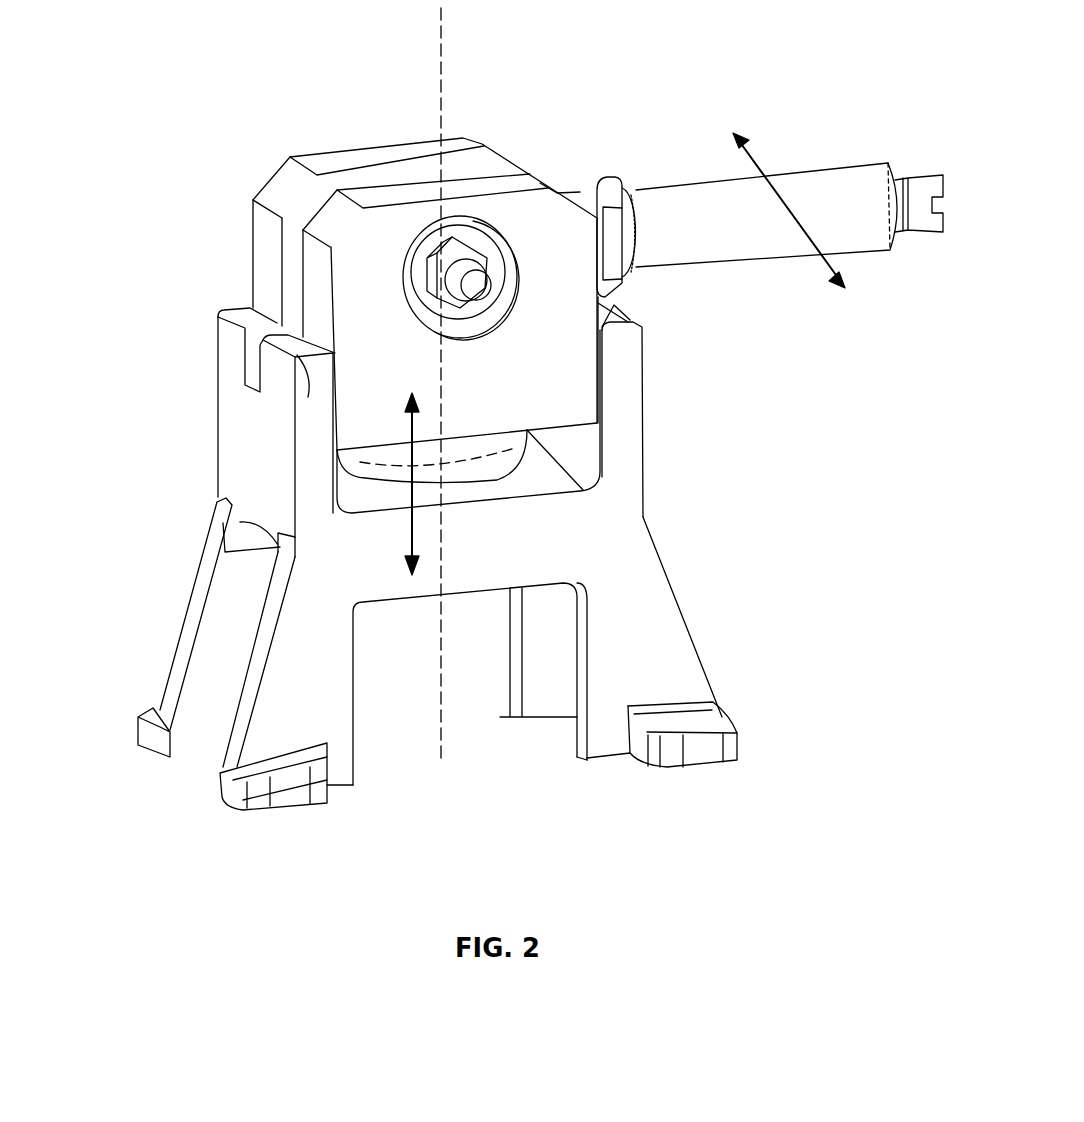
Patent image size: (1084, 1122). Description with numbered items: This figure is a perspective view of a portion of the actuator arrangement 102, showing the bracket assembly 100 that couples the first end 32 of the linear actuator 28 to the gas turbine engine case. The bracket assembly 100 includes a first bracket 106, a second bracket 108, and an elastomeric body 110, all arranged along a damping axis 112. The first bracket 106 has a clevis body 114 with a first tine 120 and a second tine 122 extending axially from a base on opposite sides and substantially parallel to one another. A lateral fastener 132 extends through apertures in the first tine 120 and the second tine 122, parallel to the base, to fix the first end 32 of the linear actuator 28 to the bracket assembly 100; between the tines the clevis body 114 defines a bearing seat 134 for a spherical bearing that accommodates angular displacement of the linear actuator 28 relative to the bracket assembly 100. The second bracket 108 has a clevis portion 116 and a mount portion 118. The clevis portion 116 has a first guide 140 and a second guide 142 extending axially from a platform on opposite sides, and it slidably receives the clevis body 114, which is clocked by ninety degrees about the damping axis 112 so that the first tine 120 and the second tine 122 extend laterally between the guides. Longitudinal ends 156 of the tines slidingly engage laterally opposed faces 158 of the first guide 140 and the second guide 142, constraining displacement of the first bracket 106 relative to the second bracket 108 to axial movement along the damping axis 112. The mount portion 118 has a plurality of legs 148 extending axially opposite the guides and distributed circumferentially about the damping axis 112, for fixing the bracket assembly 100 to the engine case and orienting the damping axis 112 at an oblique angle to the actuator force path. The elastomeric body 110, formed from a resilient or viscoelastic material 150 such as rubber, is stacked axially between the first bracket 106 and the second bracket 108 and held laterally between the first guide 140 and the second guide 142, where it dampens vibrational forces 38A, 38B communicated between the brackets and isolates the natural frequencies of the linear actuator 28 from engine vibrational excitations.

The bracket assembly 100 is at (142, 302).
The actuator arrangement 102 is at (264, 822).
The first bracket 106 is at (540, 340).
The second bracket 108 is at (575, 540).
The elastomeric body 110 is at (436, 474).
The damping axis 112 is at (446, 40).
The clevis body 114 is at (385, 153).
The clevis portion 116 is at (210, 313).
The mount portion 118 is at (207, 500).
The first tine 120 is at (540, 203).
The second tine 122 is at (475, 170).
The lateral fastener 132 is at (478, 284).
The bearing seat 134 is at (358, 181).
The first guide 140 is at (280, 330).
The second guide 142 is at (625, 375).
The legs 148 is at (273, 723).
The resilient or viscoelastic material 150 is at (462, 466).
The longitudinal ends 156 is at (588, 394).
The laterally opposed faces 158 is at (643, 462).
The linear actuator 28 is at (858, 162).
The first end 32 is at (598, 155).
The vibrational forces 38A is at (395, 468).
The vibrational forces 38B is at (789, 209).